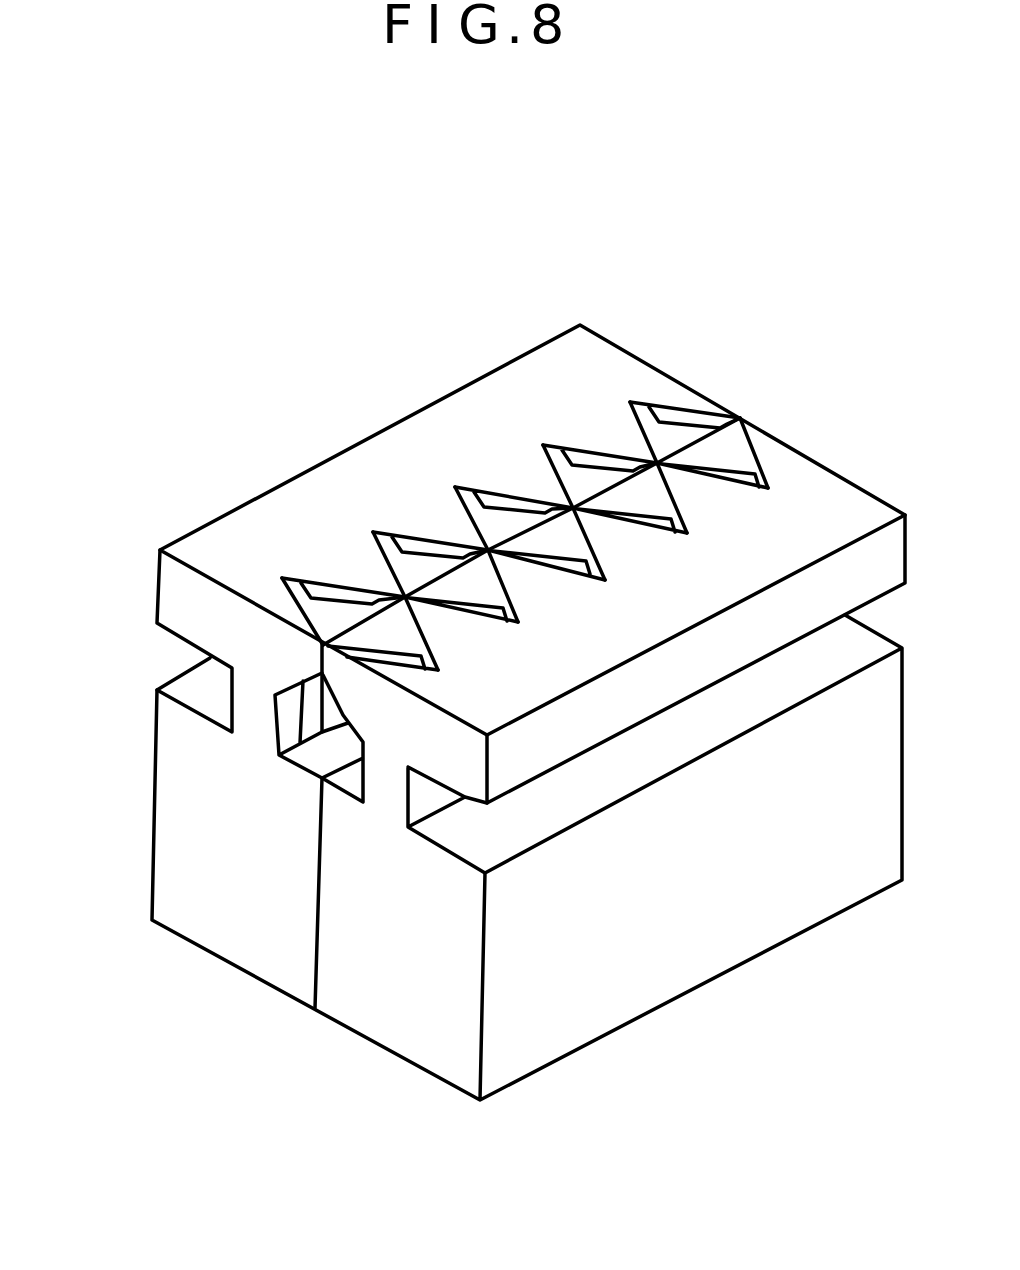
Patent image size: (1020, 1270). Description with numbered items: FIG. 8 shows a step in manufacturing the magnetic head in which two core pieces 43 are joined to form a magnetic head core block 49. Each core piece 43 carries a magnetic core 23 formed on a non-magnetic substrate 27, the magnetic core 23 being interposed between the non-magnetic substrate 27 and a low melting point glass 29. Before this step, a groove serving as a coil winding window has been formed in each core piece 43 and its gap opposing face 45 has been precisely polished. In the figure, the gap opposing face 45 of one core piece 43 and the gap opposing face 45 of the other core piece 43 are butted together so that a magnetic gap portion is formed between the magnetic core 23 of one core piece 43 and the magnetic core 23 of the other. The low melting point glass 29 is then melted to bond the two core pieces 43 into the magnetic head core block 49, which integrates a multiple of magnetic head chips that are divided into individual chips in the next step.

The magnetic head core block 49 is at (542, 327).
The magnetic core 23 is at (682, 417).
The non-magnetic substrate 27 is at (422, 520).
The low melting point glass 29 is at (737, 453).
The core piece 43 is at (165, 868).
The gap opposing face 45 is at (315, 923).